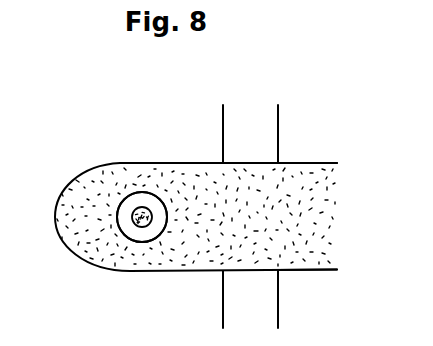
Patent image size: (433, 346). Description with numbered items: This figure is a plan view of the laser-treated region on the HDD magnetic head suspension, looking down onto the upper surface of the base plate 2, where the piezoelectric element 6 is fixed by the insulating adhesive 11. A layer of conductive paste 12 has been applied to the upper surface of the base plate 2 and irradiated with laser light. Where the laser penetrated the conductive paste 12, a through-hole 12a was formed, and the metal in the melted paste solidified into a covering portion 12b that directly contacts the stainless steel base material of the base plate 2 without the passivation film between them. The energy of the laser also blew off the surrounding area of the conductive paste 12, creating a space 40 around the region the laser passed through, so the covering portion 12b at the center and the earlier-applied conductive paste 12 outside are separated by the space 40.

The base plate 2 is at (194, 125).
The insulating adhesive 11 is at (251, 125).
The piezoelectric element 6 is at (307, 125).
The conductive paste 12 is at (195, 257).
The through-hole 12a is at (119, 229).
The covering portion 12b is at (140, 207).
The space 40 is at (127, 203).